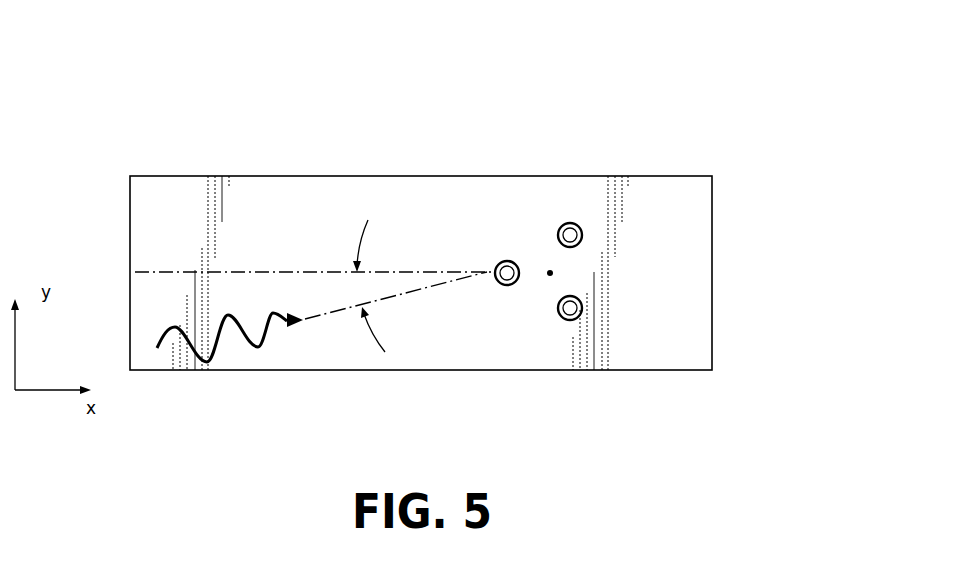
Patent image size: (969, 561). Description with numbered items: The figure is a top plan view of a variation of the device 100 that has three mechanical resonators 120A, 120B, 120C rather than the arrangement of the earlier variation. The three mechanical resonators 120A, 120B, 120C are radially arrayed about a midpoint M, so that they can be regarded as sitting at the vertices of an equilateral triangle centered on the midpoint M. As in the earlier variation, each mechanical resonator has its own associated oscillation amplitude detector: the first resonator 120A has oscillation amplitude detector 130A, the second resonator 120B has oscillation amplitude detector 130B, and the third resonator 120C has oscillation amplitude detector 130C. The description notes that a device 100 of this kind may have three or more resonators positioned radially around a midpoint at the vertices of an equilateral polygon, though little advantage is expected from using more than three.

The device 100 is at (716, 84).
The mechanical resonator 120A is at (566, 222).
The mechanical resonator 120B is at (507, 285).
The mechanical resonator 120C is at (566, 319).
The oscillation amplitude detector 130A is at (575, 222).
The oscillation amplitude detector 130B is at (506, 261).
The oscillation amplitude detector 130C is at (582, 311).
The midpoint M is at (563, 273).